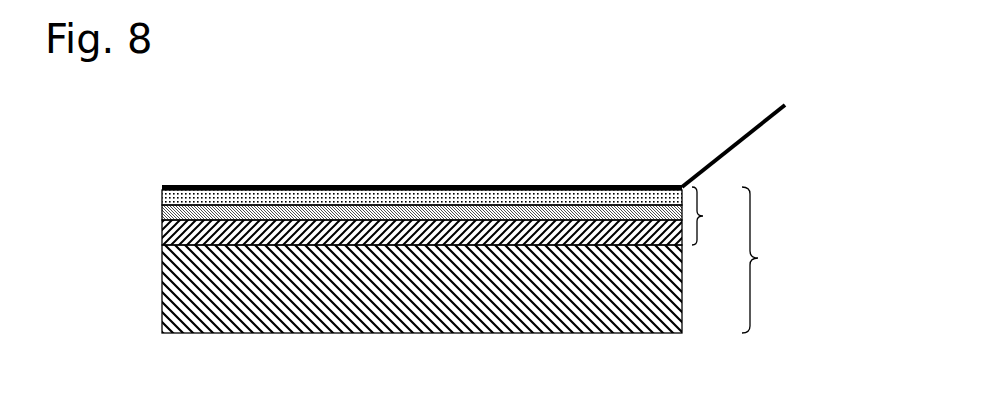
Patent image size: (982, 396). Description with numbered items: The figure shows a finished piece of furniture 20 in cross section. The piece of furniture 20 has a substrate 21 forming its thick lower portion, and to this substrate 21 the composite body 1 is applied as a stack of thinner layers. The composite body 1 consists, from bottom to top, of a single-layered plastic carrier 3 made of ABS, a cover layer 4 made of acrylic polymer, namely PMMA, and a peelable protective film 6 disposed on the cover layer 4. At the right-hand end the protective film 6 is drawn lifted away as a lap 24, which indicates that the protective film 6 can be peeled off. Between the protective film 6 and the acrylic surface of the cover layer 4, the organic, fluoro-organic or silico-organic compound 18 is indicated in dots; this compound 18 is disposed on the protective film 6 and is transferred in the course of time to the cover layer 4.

The composite body 1 is at (716, 216).
The single-layered plastic carrier 3 is at (165, 237).
The cover layer 4 is at (165, 213).
The peelable protective film 6 is at (165, 185).
The organic, fluoro-organic or silico-organic compound 18 is at (163, 198).
The piece of furniture 20 is at (781, 260).
The substrate 21 is at (168, 290).
The lap 24 is at (743, 142).